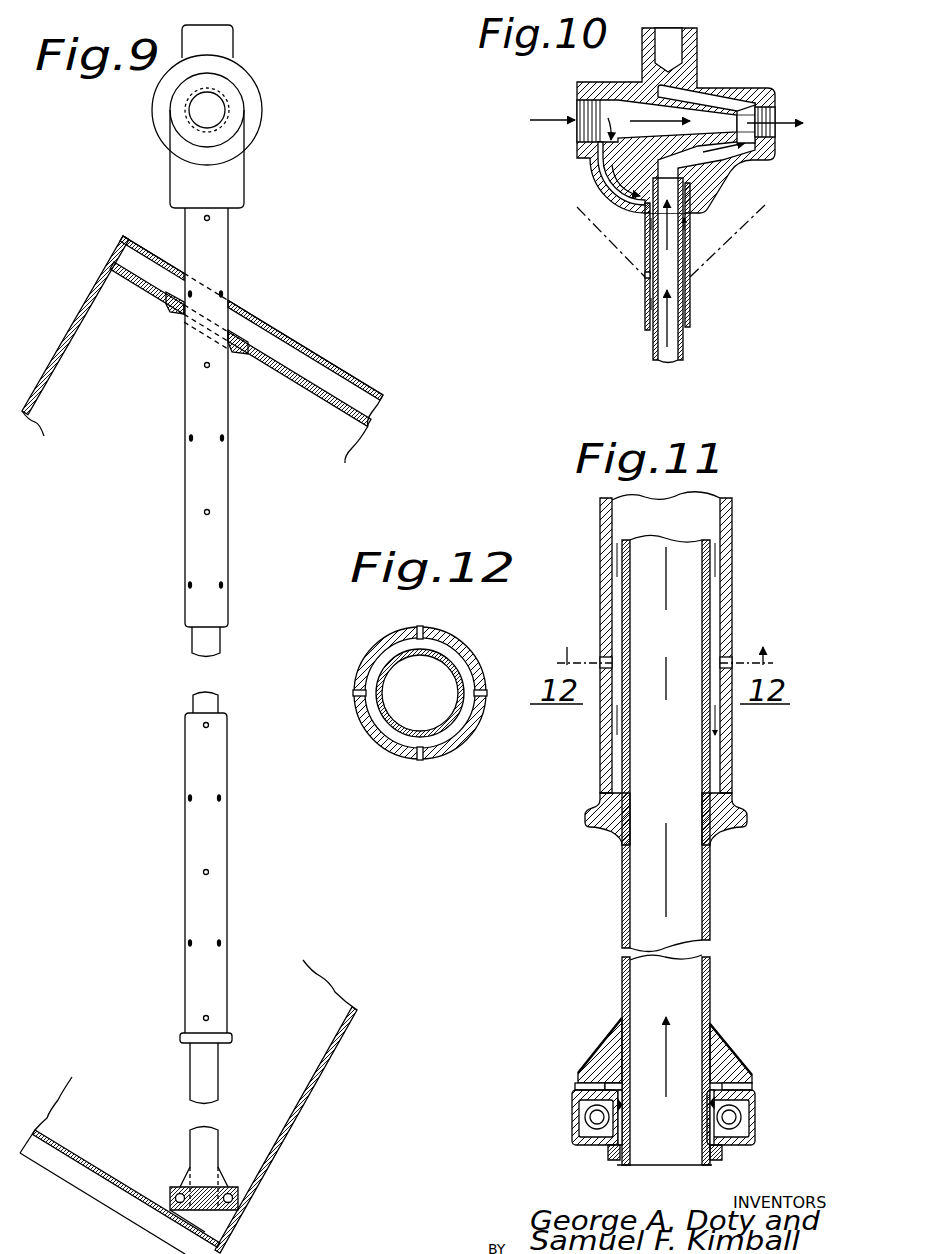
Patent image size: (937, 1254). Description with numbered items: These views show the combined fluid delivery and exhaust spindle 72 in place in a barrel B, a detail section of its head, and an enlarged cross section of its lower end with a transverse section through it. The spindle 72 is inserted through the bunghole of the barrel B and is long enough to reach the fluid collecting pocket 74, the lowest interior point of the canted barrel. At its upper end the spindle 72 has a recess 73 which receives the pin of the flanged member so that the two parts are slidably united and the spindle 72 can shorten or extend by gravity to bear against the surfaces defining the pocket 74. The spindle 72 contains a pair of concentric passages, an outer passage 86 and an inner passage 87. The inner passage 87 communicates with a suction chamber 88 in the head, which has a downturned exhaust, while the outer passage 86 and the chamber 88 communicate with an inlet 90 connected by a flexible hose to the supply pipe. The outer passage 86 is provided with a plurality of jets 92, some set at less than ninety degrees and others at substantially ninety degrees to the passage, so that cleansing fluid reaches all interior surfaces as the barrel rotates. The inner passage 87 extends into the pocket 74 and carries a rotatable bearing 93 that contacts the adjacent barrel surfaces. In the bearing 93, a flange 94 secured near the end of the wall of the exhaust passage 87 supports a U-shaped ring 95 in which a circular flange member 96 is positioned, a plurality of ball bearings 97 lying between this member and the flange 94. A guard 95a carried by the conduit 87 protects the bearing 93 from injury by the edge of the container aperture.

In FIG. 9, the combined fluid delivery and exhaust spindle 72 is at (218, 262).
In FIG. 10, the combined fluid delivery and exhaust spindle 72 is at (692, 305).
In FIG. 12, the combined fluid delivery and exhaust spindle 72 is at (375, 727).
In FIG. 11, the combined fluid delivery and exhaust spindle 72 is at (600, 764).
In FIG. 10, the recess 73 is at (672, 43).
In FIG. 9, the fluid collecting pocket 74 is at (215, 1226).
In FIG. 10, the outer passage 86 is at (650, 320).
In FIG. 12, the outer passage 86 is at (458, 662).
In FIG. 11, the outer passage 86 is at (712, 777).
In FIG. 9, the inner passage 87 is at (210, 640).
In FIG. 10, the inner passage 87 is at (672, 348).
In FIG. 12, the inner passage 87 is at (422, 687).
In FIG. 11, the inner passage 87 is at (680, 755).
In FIG. 10, the suction chamber 88 is at (737, 100).
In FIG. 9, the inlet 90 is at (216, 123).
In FIG. 10, the inlet 90 is at (572, 131).
In FIG. 9, the jets 92 is at (209, 367).
In FIG. 10, the jets 92 is at (645, 275).
In FIG. 12, the jets 92 is at (418, 626).
In FIG. 11, the jets 92 is at (606, 660).
In FIG. 9, the rotatable bearing 93 is at (176, 1187).
In FIG. 11, the rotatable bearing 93 is at (727, 1086).
In FIG. 11, the flange 94 is at (698, 1103).
In FIG. 11, the U-shaped ring 95 is at (580, 1088).
In FIG. 11, the guard 95a is at (609, 1049).
In FIG. 11, the circular flange member 96 is at (610, 1153).
In FIG. 11, the ball bearings 97 is at (590, 1115).
In FIG. 9, the barrel B is at (299, 350).